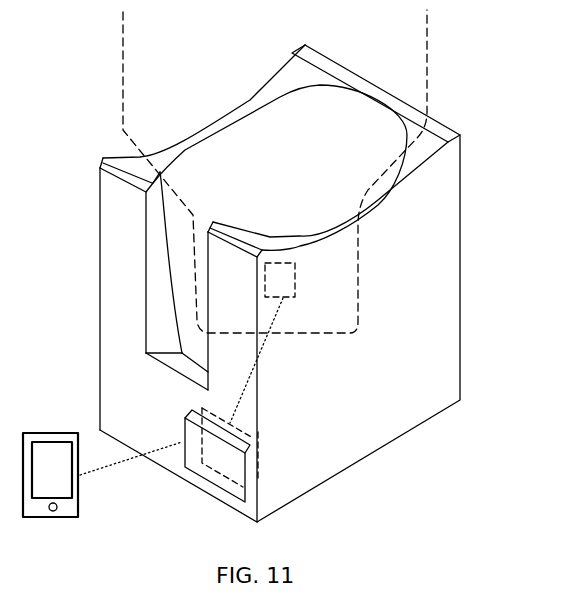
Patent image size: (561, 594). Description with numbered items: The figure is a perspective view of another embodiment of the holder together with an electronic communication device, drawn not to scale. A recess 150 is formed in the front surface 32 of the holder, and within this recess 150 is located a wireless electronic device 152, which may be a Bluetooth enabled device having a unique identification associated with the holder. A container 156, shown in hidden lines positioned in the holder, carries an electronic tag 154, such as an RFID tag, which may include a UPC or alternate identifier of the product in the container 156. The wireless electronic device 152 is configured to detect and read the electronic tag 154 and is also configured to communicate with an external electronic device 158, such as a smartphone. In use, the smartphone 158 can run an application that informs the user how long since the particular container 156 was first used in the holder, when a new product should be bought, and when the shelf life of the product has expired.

The recess 150 is at (262, 482).
The front surface 32 is at (110, 312).
The container 156 is at (123, 107).
The electronic tag 154 is at (295, 287).
The wireless electronic device 152 is at (230, 493).
The external electronic device 158 is at (50, 432).